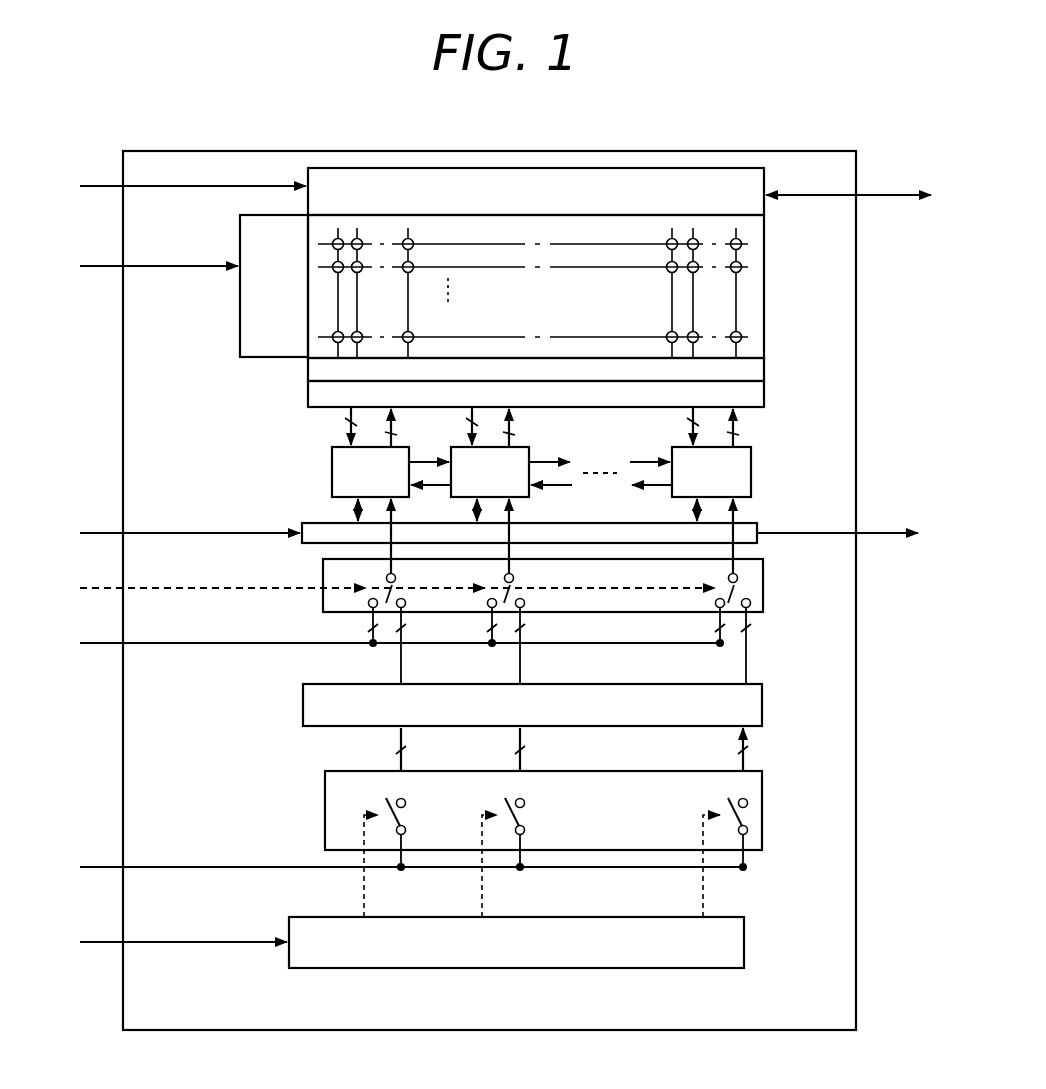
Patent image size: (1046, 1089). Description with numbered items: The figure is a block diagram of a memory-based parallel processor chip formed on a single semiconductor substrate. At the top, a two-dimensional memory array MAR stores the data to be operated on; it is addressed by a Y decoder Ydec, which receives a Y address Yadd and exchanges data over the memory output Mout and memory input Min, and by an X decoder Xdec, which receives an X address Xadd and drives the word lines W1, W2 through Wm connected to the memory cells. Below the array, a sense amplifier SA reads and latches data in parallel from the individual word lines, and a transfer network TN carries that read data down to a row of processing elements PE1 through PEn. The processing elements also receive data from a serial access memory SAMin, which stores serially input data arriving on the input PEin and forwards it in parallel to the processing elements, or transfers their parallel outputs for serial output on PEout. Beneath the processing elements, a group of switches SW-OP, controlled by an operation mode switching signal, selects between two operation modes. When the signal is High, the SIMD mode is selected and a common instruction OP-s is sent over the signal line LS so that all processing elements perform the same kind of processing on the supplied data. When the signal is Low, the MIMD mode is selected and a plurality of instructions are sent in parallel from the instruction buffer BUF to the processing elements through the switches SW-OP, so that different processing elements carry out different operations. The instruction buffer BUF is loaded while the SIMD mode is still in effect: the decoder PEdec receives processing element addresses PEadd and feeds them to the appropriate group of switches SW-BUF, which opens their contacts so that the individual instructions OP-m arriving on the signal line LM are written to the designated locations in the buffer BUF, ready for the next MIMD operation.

The Y decoder Ydec is at (536, 191).
The X decoder Xdec is at (274, 286).
The two-dimensional memory array MAR is at (801, 252).
The word line W1 is at (533, 234).
The word line W2 is at (533, 257).
The word line Wm is at (533, 327).
The sense amplifier SA is at (764, 372).
The transfer network TN is at (764, 404).
The Y address Yadd is at (193, 199).
The X address Xadd is at (187, 278).
The memory output Mout is at (885, 187).
The memory input Min is at (895, 226).
The processing element PE1 is at (330, 473).
The processing element PEn is at (751, 458).
The serial access memory SAMin is at (757, 525).
The processing element input PEin is at (200, 543).
The processing element output PEout is at (813, 524).
The group of switches SW-OP is at (763, 604).
The signal line LS is at (173, 645).
The common instruction OP-s is at (283, 652).
The instruction buffer BUF is at (762, 716).
The group of switches SW-BUF is at (762, 838).
The signal line LM is at (215, 864).
The instruction OP-m is at (276, 876).
The decoder PEdec is at (744, 951).
The processing element address PEadd is at (224, 956).